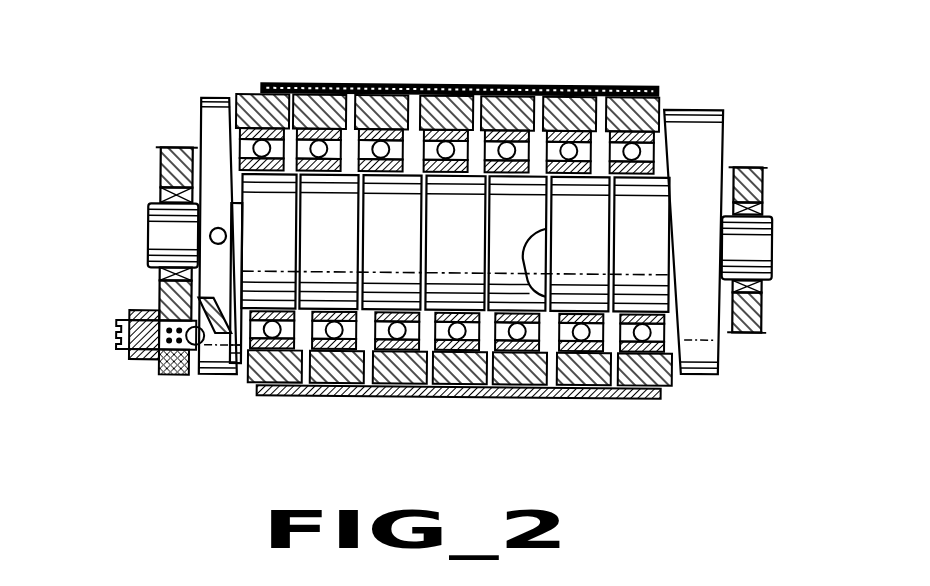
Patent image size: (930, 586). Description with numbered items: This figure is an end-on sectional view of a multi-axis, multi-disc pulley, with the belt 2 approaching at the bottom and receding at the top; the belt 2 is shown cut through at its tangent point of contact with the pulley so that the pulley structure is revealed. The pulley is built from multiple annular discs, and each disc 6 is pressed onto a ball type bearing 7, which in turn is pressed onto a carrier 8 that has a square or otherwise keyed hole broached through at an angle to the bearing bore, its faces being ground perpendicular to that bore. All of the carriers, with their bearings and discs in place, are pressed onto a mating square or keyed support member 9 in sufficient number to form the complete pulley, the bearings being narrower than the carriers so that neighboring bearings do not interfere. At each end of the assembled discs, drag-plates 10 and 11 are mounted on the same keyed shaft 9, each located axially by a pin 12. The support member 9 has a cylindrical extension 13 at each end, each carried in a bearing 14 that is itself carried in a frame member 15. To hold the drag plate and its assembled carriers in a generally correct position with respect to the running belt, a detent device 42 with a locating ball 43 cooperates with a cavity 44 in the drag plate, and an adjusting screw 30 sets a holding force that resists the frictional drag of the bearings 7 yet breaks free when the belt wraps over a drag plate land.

The belt 2 is at (635, 90).
The disc 6 is at (390, 88).
The ball type bearing 7 is at (510, 90).
The carrier 8 is at (344, 396).
The support member 9 is at (452, 398).
The drag-plate 10 is at (229, 100).
The drag-plate 11 is at (681, 394).
The pin 12 is at (210, 238).
The cylindrical extension 13 is at (167, 222).
The bearing 14 is at (157, 187).
The frame member 15 is at (743, 167).
The adjusting screw 30 is at (122, 318).
The detent device 42 is at (97, 346).
The locating ball 43 is at (163, 376).
The cavity 44 is at (212, 382).